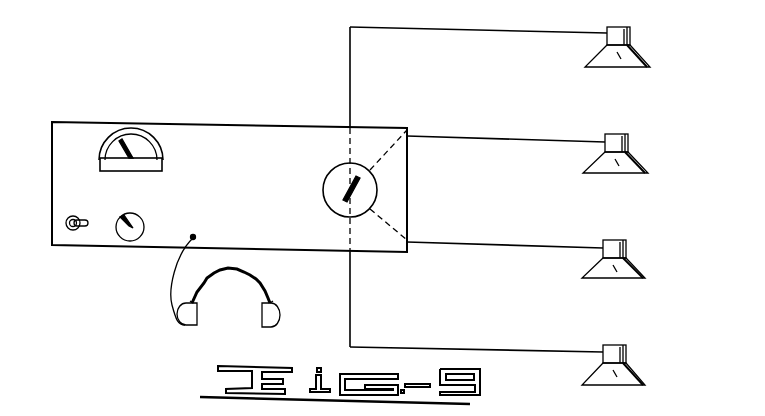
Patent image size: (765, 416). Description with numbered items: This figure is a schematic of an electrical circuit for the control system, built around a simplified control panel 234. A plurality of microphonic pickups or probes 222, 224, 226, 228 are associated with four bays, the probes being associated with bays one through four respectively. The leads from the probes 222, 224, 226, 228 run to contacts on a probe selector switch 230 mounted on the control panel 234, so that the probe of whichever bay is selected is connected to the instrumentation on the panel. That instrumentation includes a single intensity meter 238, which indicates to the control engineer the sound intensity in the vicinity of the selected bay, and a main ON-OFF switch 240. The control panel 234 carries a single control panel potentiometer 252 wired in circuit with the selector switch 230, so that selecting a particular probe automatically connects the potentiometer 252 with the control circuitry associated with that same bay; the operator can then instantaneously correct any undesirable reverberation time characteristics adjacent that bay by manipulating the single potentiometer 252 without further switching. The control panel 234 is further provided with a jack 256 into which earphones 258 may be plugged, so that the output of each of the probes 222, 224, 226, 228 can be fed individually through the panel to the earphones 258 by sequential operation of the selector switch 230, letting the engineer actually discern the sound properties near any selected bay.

The microphonic probe 222 is at (636, 57).
The microphonic probe 224 is at (634, 165).
The microphonic probe 226 is at (632, 270).
The microphonic probe 228 is at (630, 372).
The probe selector switch 230 is at (336, 175).
The control panel 234 is at (187, 128).
The intensity meter 238 is at (133, 137).
The main ON-OFF switch 240 is at (68, 224).
The control panel potentiometer 252 is at (128, 240).
The jack 256 is at (195, 236).
The earphones 258 is at (275, 316).